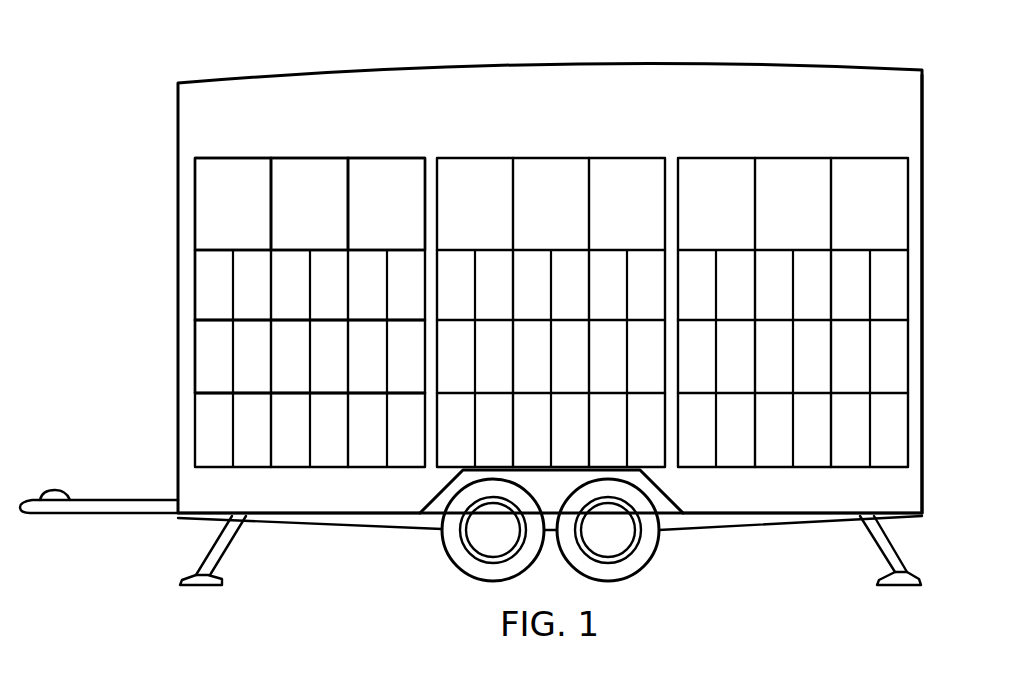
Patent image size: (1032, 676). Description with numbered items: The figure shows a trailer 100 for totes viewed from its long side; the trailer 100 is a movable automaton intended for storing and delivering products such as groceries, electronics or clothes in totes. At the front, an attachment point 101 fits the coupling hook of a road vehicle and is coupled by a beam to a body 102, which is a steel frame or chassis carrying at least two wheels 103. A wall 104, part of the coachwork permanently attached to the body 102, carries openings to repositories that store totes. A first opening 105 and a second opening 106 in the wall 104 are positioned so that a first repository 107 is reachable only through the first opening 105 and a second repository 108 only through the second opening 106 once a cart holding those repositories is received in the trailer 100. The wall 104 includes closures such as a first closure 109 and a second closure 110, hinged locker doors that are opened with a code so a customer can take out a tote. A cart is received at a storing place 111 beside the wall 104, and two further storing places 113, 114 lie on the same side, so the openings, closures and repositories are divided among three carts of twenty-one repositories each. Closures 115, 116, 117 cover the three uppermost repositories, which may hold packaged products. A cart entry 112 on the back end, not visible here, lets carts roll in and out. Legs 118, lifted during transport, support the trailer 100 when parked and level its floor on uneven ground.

The trailer 100 is at (557, 63).
The attachment point 101 is at (44, 514).
The body 102 is at (326, 523).
The wheels 103 is at (447, 556).
The wall 104 is at (716, 492).
The first opening 105 is at (208, 305).
The second opening 106 is at (208, 357).
The first repository 107 is at (208, 305).
The second repository 108 is at (208, 357).
The first closure 109 is at (210, 280).
The second closure 110 is at (212, 372).
The storing place 111 is at (302, 158).
The cart entry 112 is at (921, 108).
The storing place 113 is at (545, 158).
The storing place 114 is at (722, 158).
The closure 115 is at (219, 229).
The closure 116 is at (294, 229).
The closure 117 is at (371, 228).
The legs 118 is at (222, 584).